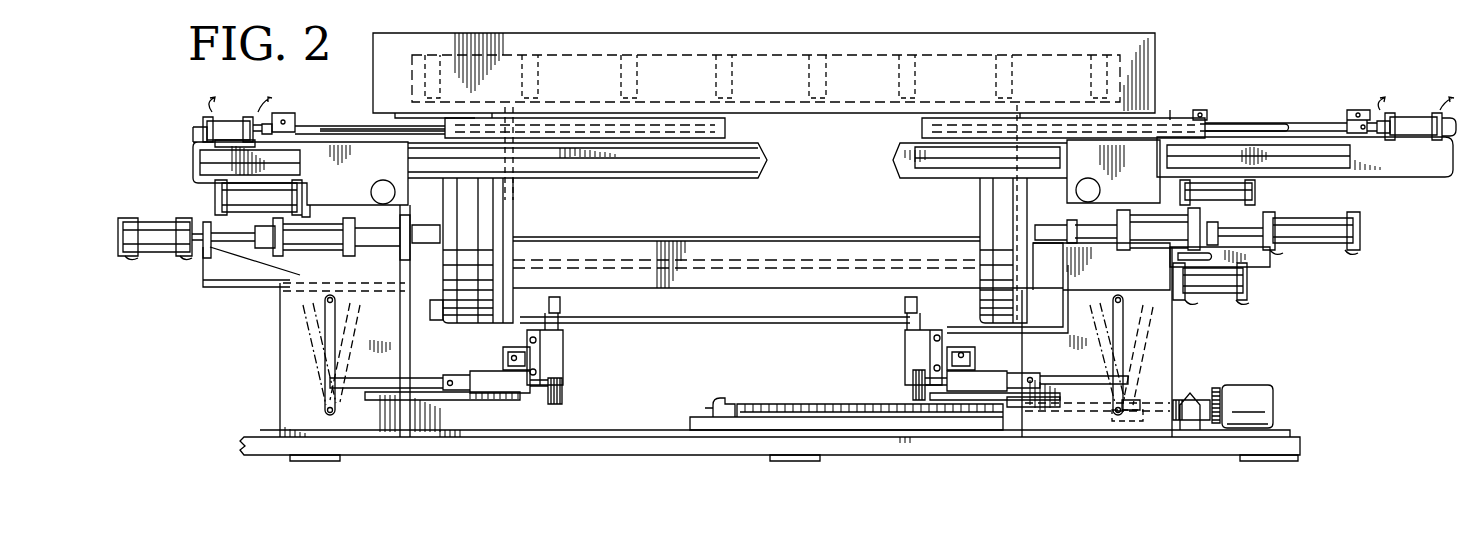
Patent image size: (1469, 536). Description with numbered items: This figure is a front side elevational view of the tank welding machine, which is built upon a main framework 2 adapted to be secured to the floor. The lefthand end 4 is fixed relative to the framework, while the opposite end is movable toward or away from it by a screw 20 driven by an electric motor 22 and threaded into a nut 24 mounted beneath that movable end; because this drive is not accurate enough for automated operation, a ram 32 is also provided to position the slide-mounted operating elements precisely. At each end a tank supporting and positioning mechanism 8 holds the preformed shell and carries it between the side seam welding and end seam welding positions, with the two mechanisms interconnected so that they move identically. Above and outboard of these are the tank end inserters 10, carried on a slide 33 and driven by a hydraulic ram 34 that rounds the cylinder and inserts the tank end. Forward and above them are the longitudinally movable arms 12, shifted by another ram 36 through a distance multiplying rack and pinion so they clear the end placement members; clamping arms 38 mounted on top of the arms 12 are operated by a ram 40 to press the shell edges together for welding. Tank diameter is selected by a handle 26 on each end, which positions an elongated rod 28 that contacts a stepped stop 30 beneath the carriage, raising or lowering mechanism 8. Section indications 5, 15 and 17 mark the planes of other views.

The main framework 2 is at (656, 448).
The one end 4 is at (601, 88).
The section line 5- 5 is at (607, 415).
The tank supporting and positioning mechanism 8 is at (581, 335).
The tank end inserters 10 is at (505, 213).
The longitudinally movable arms 12 is at (760, 163).
The section line 15- 15 is at (1045, 268).
The section line 17- 17 is at (215, 213).
The screw 20 is at (781, 405).
The electric motor 22 is at (1223, 407).
The nut 24 is at (1132, 403).
The handle 26 is at (332, 345).
The elongated bar or rod 28 is at (428, 385).
The stop 30 is at (562, 395).
The ram 32 is at (1220, 287).
The slide 33 is at (1258, 262).
The hydraulic ram 34 is at (155, 240).
The ram 36 is at (245, 191).
The clamping arms 38 is at (725, 130).
The ram 40 is at (228, 133).